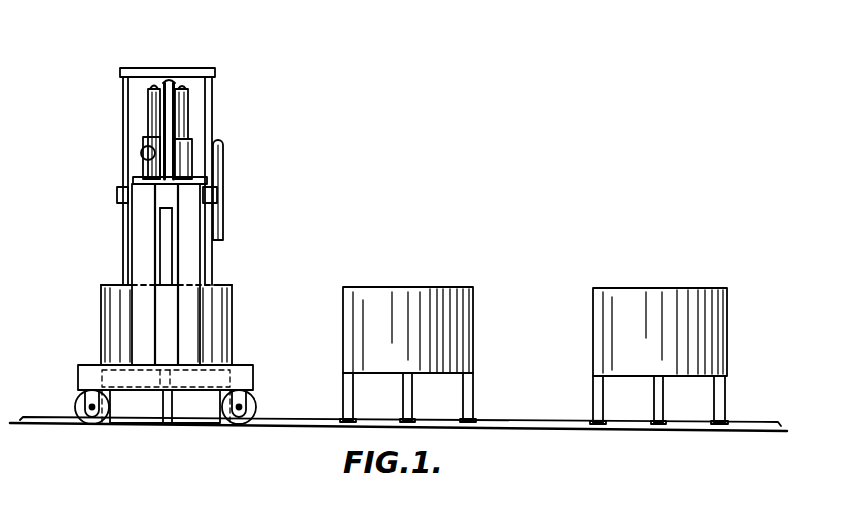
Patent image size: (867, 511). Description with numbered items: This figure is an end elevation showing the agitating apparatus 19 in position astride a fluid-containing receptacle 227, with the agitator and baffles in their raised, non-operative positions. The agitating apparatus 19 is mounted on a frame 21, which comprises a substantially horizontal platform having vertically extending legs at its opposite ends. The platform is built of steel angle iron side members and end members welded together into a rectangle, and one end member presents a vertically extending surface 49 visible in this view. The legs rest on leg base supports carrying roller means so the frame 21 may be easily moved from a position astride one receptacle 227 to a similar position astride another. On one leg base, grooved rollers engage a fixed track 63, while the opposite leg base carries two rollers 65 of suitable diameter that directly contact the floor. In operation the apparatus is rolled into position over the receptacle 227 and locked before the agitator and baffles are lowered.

The agitating apparatus 19 is at (196, 119).
The frame 21 is at (233, 196).
The vertically extending surface 49 is at (155, 274).
The drum container 227 is at (234, 312).
The rollers 65 is at (84, 404).
The fixed track 63 is at (517, 420).